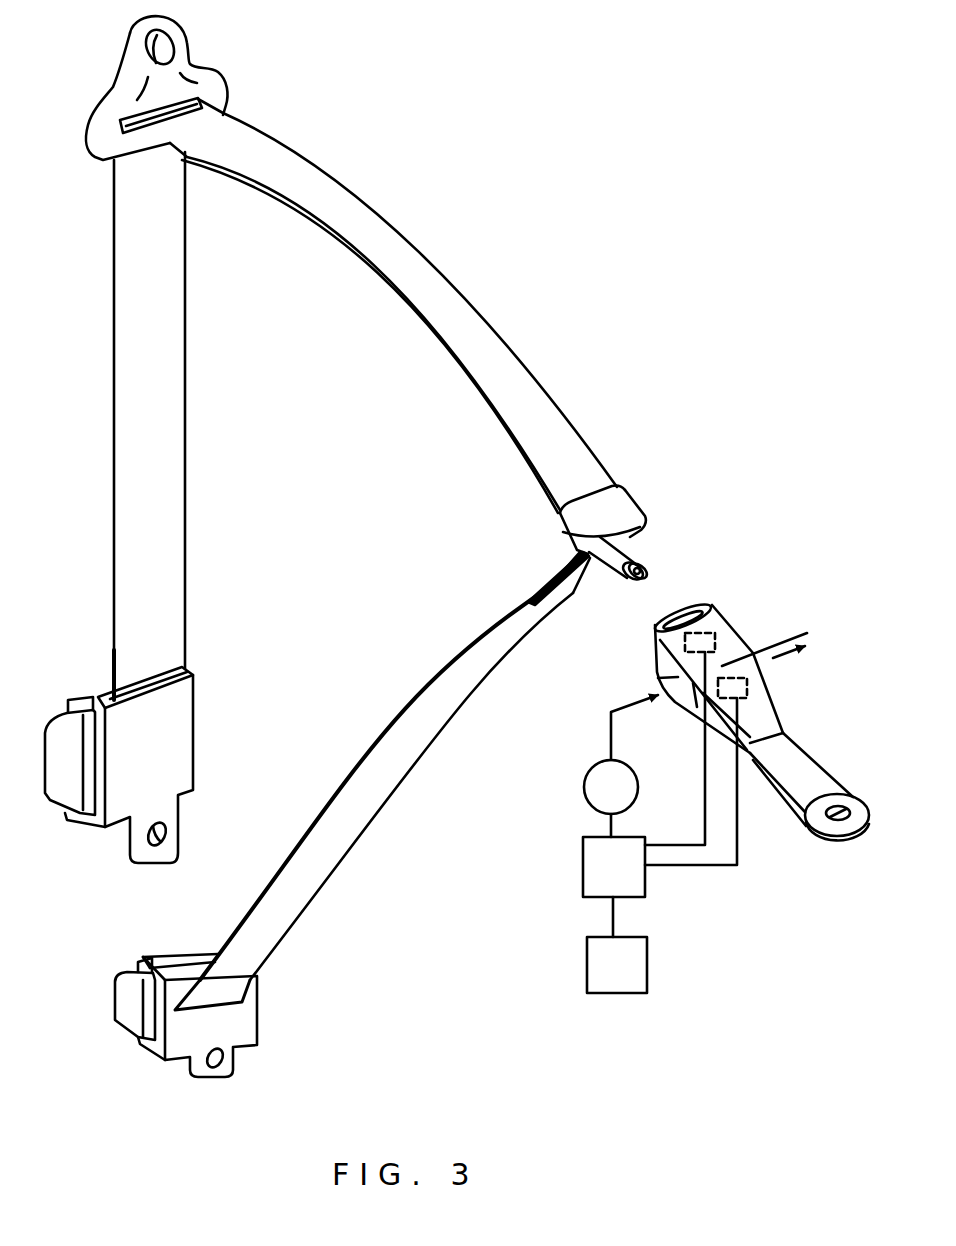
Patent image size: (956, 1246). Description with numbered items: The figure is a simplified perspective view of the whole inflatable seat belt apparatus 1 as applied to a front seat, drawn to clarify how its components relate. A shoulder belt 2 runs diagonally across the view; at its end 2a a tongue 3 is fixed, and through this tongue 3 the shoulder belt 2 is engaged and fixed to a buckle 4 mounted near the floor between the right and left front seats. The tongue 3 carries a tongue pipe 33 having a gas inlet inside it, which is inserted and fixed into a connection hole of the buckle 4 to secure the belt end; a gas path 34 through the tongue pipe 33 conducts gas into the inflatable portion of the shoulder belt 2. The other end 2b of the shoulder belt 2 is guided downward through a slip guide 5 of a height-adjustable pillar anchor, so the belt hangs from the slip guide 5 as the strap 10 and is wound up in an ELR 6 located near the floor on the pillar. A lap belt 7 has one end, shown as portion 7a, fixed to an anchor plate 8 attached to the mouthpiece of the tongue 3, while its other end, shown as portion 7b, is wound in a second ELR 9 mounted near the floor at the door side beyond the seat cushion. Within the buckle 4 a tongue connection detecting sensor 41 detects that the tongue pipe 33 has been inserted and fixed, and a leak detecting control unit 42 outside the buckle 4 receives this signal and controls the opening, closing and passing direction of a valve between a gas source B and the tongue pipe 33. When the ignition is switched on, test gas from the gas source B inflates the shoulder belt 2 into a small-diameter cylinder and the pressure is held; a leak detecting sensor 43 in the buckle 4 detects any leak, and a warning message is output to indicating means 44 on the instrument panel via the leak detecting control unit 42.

The inflatable seat belt apparatus 1 is at (488, 210).
The shoulder belt 2 is at (515, 362).
The end of shoulder belt 2a is at (622, 481).
The other end of shoulder belt 2b is at (110, 692).
The tongue 3 is at (560, 548).
The buckle 4 is at (742, 632).
The slip guide 5 is at (213, 72).
The ELR 6 is at (195, 742).
The lap belt 7 is at (412, 772).
The lap belt end at tongue 7a is at (583, 588).
The lap belt end at anchor 7b is at (268, 964).
The anchor plate 8 is at (555, 578).
The ELR 9 is at (258, 1028).
The shoulder belt strap 10 is at (187, 402).
The tongue pipe 33 is at (650, 554).
The gas path 34 is at (628, 580).
The tongue connection detecting sensor 41 is at (725, 613).
The leak detecting control unit 42 is at (650, 896).
The leak detecting sensor 43 is at (748, 680).
The indicating means 44 is at (650, 992).
The gas source B is at (640, 790).